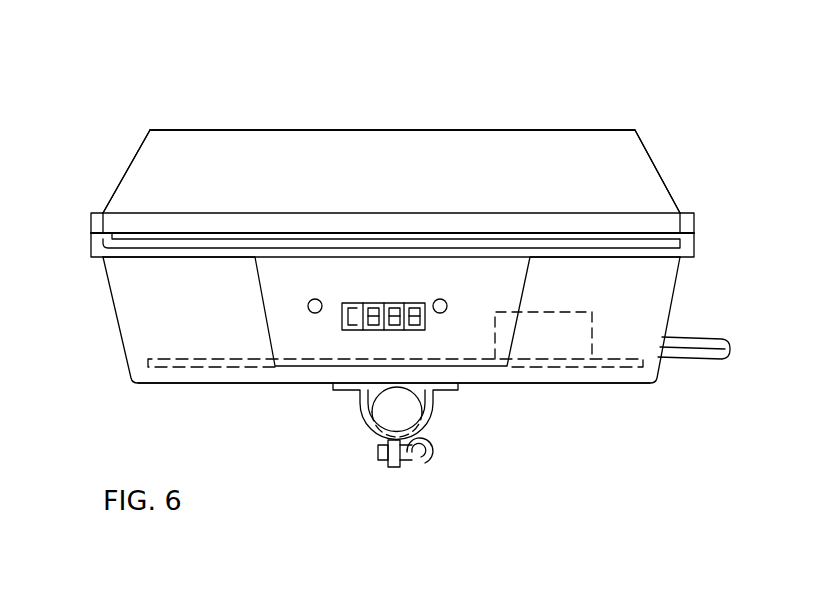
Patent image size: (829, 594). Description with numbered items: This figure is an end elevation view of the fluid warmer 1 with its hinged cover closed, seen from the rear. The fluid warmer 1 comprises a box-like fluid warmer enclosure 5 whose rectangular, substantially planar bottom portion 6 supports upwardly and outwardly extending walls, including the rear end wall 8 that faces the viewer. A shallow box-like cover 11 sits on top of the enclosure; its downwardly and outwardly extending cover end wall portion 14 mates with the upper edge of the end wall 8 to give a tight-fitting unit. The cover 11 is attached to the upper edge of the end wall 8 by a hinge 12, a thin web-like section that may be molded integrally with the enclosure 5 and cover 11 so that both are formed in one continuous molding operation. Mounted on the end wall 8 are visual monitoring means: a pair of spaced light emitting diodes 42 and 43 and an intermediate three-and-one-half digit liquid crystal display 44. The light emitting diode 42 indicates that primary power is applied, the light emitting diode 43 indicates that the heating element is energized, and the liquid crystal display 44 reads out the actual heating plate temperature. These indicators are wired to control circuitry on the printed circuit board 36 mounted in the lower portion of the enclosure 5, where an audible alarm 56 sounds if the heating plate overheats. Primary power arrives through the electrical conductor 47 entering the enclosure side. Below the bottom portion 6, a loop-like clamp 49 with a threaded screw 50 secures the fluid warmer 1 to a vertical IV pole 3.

The fluid warmer 1 is at (420, 112).
The IV pole 3 is at (383, 415).
The fluid warmer enclosure 5 is at (673, 282).
The bottom portion 6 is at (633, 383).
The end wall 8 is at (275, 263).
The cover 11 is at (235, 130).
The hinge 12 is at (145, 234).
The cover end wall portion 14 is at (515, 152).
The printed circuit board 36 is at (180, 363).
The light emitting diode 42 is at (322, 300).
The light emitting diode 43 is at (446, 300).
The liquid crystal display 44 is at (382, 330).
The electrical conductor 47 is at (688, 340).
The clamp 49 is at (433, 408).
The threaded screw 50 is at (430, 458).
The audible alarm 56 is at (592, 312).